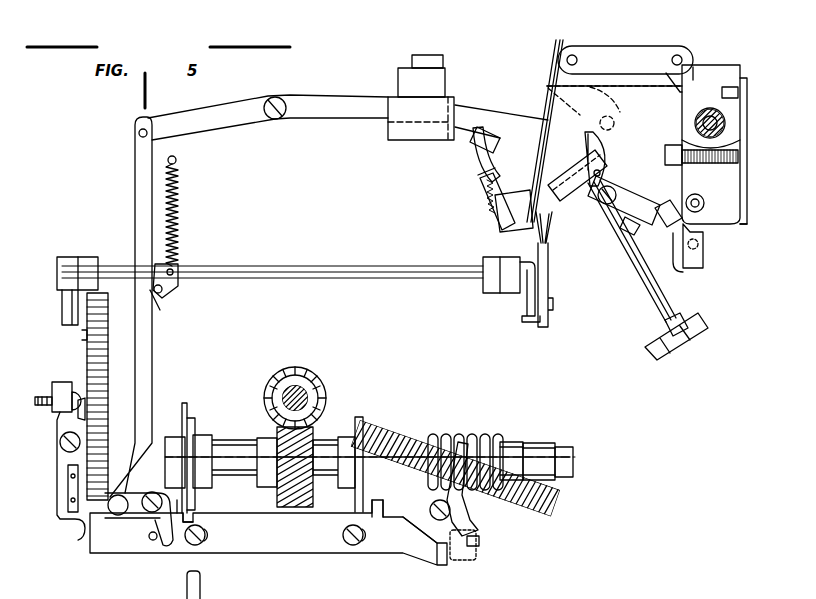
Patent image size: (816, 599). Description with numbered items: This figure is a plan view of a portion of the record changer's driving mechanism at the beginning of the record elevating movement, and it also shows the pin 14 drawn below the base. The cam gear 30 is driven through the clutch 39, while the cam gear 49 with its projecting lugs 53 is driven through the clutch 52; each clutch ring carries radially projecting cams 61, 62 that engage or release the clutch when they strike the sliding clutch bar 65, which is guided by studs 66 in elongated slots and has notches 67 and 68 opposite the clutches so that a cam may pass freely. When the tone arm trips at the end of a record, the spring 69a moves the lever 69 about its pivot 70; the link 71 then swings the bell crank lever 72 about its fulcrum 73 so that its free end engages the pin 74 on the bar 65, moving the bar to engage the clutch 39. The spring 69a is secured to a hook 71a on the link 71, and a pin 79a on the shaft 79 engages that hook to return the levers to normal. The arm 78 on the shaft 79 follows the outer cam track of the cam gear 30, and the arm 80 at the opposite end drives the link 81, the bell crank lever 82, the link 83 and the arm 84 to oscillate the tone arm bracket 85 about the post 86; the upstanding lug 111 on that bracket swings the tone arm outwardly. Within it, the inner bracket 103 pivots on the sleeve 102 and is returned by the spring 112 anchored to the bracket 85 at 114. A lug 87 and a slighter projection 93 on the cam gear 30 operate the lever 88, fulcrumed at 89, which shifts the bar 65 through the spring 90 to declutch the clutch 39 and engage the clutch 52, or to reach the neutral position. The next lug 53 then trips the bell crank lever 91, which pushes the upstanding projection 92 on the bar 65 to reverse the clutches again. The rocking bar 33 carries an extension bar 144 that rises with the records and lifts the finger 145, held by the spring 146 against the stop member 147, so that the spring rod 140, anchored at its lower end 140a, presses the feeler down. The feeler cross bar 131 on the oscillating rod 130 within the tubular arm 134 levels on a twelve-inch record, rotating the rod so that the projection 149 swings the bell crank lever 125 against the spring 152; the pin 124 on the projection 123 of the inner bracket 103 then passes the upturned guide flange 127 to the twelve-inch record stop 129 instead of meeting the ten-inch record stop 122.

The pin 14 is at (203, 590).
The cam gear 30 is at (108, 370).
The rocking bar 33 is at (426, 143).
The clutch 39 is at (196, 420).
The cam gear 49 is at (560, 503).
The clutch 52 is at (358, 415).
The projecting lugs 53 is at (515, 500).
The radially projecting cam 61 is at (383, 503).
The radially projecting cam 62 is at (184, 403).
The clutch bar 65 is at (318, 553).
The studs 66 is at (198, 546).
The notch 67 is at (195, 518).
The notch 68 is at (415, 550).
The lever 69 is at (478, 108).
The spring 69a is at (180, 219).
The pivot 70 is at (277, 120).
The link 71 is at (137, 196).
The hook 71a is at (178, 290).
The bell crank lever 72 is at (125, 513).
The fulcrum 73 is at (148, 512).
The pin 74 is at (153, 540).
The arm 78 is at (62, 305).
The shaft 79 is at (318, 266).
The pin 79a is at (160, 308).
The arm 80 is at (524, 306).
The link 81 is at (549, 276).
The bell crank lever 82 is at (614, 108).
The link 83 is at (625, 60).
The arm 84 is at (688, 60).
The tone arm bracket 85 is at (711, 144).
The post 86 is at (722, 113).
The lug 87 is at (82, 405).
The lever 88 is at (60, 416).
The fulcrum 89 is at (60, 447).
The spring 90 is at (80, 527).
The bell crank lever 91 is at (456, 500).
The upstanding projection 92 is at (452, 560).
The projection 93 is at (82, 336).
The sleeve 102 is at (726, 126).
The inner bracket 103 is at (728, 190).
The upstanding lug 111 is at (745, 92).
The spring 112 is at (708, 194).
The connection point 114 is at (666, 146).
The ten-inch record stop 122 is at (640, 232).
The projection 123 is at (703, 262).
The pin 124 is at (699, 245).
The bell crank lever 125 is at (640, 204).
The upturned guide flange 127 is at (687, 263).
The twelve-inch record stop 129 is at (672, 202).
The oscillating rod 130 is at (668, 326).
The cross bar 131 is at (665, 355).
The tubular arm 134 is at (640, 292).
The spring rod 140 is at (545, 138).
The lower connection 140a is at (550, 228).
The extension bar 144 is at (492, 135).
The finger 145 is at (480, 152).
The spring 146 is at (490, 208).
The stop member 147 is at (480, 190).
The projection 149 is at (593, 143).
The spring 152 is at (600, 172).